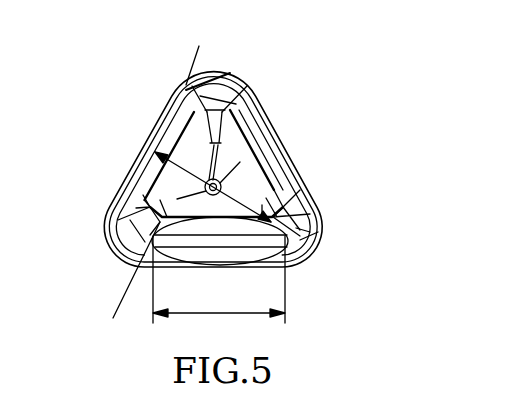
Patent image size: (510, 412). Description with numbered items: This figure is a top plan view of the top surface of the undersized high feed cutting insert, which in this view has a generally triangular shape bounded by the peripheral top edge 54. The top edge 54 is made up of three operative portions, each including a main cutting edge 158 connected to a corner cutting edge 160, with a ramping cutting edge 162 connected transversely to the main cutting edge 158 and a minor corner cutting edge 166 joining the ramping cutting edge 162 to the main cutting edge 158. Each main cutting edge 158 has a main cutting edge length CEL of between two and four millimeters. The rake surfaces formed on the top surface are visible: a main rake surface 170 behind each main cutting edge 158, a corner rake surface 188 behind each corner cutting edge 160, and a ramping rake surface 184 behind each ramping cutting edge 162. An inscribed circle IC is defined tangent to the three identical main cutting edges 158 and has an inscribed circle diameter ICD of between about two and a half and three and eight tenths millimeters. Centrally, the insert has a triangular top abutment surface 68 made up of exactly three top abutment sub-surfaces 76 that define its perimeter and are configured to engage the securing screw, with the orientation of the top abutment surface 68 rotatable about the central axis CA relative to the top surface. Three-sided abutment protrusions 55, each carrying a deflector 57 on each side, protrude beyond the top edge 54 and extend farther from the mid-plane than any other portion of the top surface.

The peripheral top edge 54 is at (320, 187).
The abutment protrusion 55 is at (188, 200).
The top abutment surface 68 is at (134, 213).
The deflector 57 is at (302, 170).
The top abutment sub-surface 76 is at (203, 54).
The main cutting edge 158 is at (300, 178).
The corner cutting edge 160 is at (240, 73).
The ramping cutting edge 162 is at (320, 232).
The minor corner cutting edge 166 is at (325, 205).
The main rake surface 170 is at (278, 160).
The ramping rake surface 184 is at (320, 222).
The corner rake surface 188 is at (258, 88).
The inscribed circle IC is at (177, 100).
The inscribed circle diameter ICD is at (155, 152).
The central axis CA is at (126, 279).
The main cutting edge length CEL is at (219, 291).